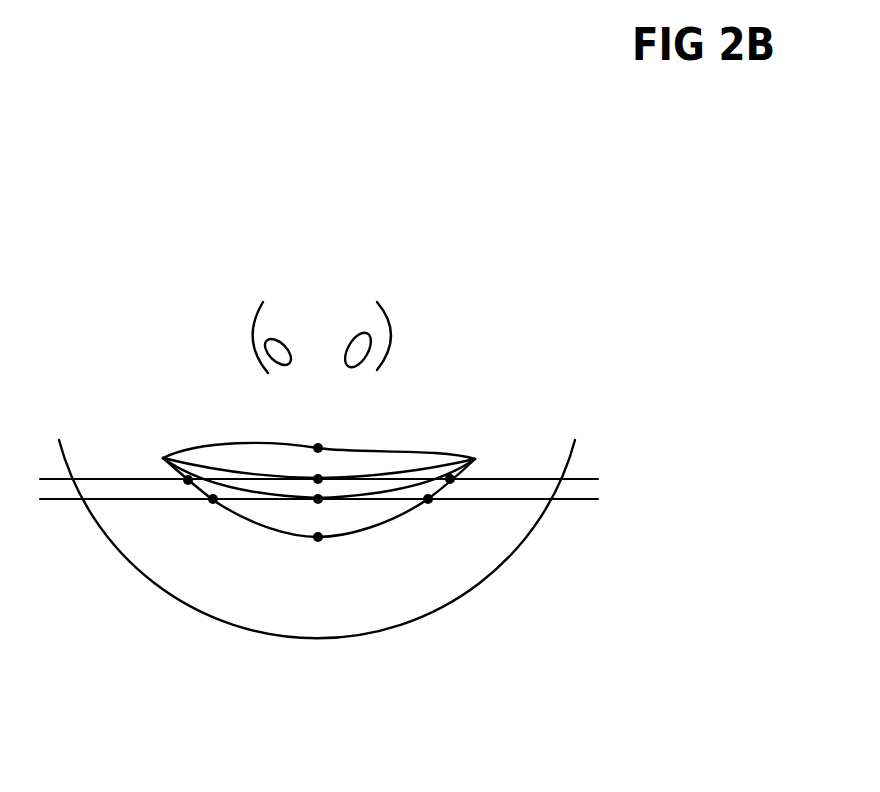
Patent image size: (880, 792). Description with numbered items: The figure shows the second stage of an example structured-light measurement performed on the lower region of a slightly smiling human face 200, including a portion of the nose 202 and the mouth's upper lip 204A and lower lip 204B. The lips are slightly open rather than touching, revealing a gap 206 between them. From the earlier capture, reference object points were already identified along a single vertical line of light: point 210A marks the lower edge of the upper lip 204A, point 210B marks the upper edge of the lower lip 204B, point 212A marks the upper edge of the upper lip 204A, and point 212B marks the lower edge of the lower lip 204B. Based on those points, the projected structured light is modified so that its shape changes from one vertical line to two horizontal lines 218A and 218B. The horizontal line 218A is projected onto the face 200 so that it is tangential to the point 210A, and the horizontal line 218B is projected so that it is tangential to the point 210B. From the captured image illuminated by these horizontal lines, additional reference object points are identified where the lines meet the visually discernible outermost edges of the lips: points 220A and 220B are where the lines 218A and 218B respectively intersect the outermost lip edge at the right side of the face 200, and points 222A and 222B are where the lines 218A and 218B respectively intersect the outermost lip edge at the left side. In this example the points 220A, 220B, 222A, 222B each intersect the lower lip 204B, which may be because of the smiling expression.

The human face 200 is at (205, 588).
The nose 202 is at (395, 323).
The upper lip 204A is at (207, 447).
The lower lip 204B is at (275, 533).
The gap 206 is at (258, 515).
The reference object point 210A is at (322, 473).
The reference object point 210B is at (318, 499).
The reference object point 212A is at (322, 447).
The reference object point 212B is at (318, 540).
The horizontal line 218A is at (52, 478).
The horizontal line 218B is at (65, 500).
The reference object point 220A is at (167, 460).
The reference object point 220B is at (213, 502).
The reference object point 222A is at (503, 453).
The reference object point 222B is at (433, 500).